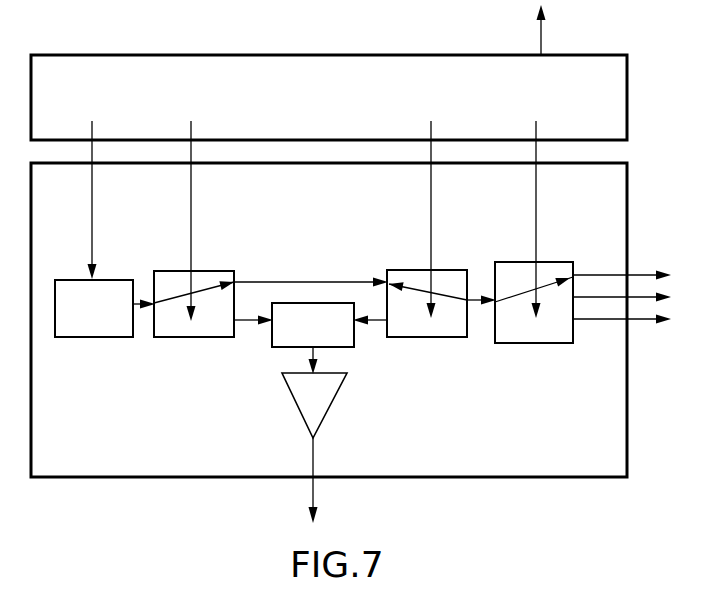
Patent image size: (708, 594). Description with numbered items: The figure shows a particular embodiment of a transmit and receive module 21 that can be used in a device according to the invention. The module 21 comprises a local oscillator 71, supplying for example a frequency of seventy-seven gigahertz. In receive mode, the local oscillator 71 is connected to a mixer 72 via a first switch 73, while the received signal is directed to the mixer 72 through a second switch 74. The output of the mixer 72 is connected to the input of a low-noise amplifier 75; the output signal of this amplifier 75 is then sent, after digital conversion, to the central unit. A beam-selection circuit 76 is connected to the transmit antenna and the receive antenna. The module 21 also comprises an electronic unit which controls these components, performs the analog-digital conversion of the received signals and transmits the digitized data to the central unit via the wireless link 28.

The transmit and receive module 21 is at (563, 477).
The wireless link 28 is at (541, 38).
The local oscillator 71 is at (105, 278).
The mixer 72 is at (338, 347).
The first switch 73 is at (212, 271).
The second switch 74 is at (455, 270).
The low-noise amplifier 75 is at (328, 405).
The beam-selection circuit 76 is at (563, 262).